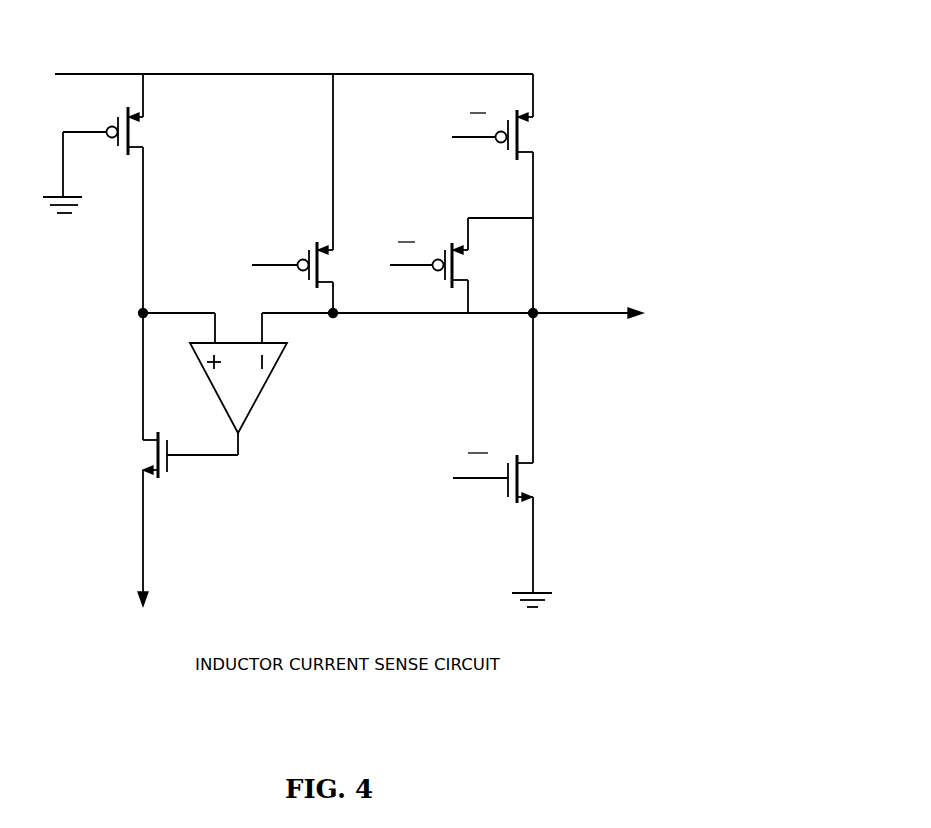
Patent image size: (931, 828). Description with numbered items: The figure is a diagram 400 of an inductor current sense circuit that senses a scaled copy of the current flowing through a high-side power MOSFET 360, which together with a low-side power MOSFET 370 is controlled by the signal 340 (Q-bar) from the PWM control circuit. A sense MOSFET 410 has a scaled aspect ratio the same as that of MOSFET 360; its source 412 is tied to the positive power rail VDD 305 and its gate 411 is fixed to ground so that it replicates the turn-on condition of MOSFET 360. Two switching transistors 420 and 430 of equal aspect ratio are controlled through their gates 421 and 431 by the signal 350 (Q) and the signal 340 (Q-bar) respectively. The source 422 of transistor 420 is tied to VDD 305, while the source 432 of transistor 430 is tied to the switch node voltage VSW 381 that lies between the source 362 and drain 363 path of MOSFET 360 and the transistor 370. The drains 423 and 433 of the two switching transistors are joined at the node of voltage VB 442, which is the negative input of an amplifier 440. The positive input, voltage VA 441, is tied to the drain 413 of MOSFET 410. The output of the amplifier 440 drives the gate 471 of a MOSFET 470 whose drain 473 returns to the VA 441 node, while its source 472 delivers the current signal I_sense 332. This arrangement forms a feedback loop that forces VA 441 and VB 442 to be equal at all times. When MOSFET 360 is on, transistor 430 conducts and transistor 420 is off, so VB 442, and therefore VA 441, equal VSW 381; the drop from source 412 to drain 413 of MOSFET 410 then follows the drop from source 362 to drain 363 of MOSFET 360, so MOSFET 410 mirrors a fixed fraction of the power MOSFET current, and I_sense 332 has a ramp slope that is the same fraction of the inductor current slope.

The diagram 400 is at (68, 27).
The positive power rail VDD 305 is at (67, 75).
The current signal I_sense 332 is at (147, 557).
The signal Q-bar 340 is at (462, 130).
The signal Q 350 is at (297, 257).
The power MOSFET 360 is at (530, 193).
The source of MOSFET 360 362 is at (540, 111).
The drain of MOSFET 360 363 is at (535, 158).
The power MOSFET 370 is at (465, 475).
The voltage VSW 381 is at (557, 315).
The MOSFET 410 is at (134, 193).
The gate of MOSFET 410 411 is at (113, 147).
The source of MOSFET 410 412 is at (145, 118).
The drain of MOSFET 410 413 is at (147, 155).
The switching transistor 420 is at (301, 193).
The gate of transistor 420 421 is at (259, 244).
The source of transistor 420 422 is at (337, 243).
The drain of transistor 420 423 is at (338, 285).
The switching transistor 430 is at (458, 265).
The gate of transistor 430 431 is at (437, 275).
The source of transistor 430 432 is at (457, 240).
The drain of transistor 430 433 is at (475, 288).
The amplifier 440 is at (247, 384).
The voltage VA 441 is at (207, 328).
The voltage VB 442 is at (265, 330).
The MOSFET 470 is at (147, 461).
The gate of MOSFET 470 471 is at (173, 465).
The source of MOSFET 470 472 is at (150, 482).
The drain of MOSFET 470 473 is at (138, 435).